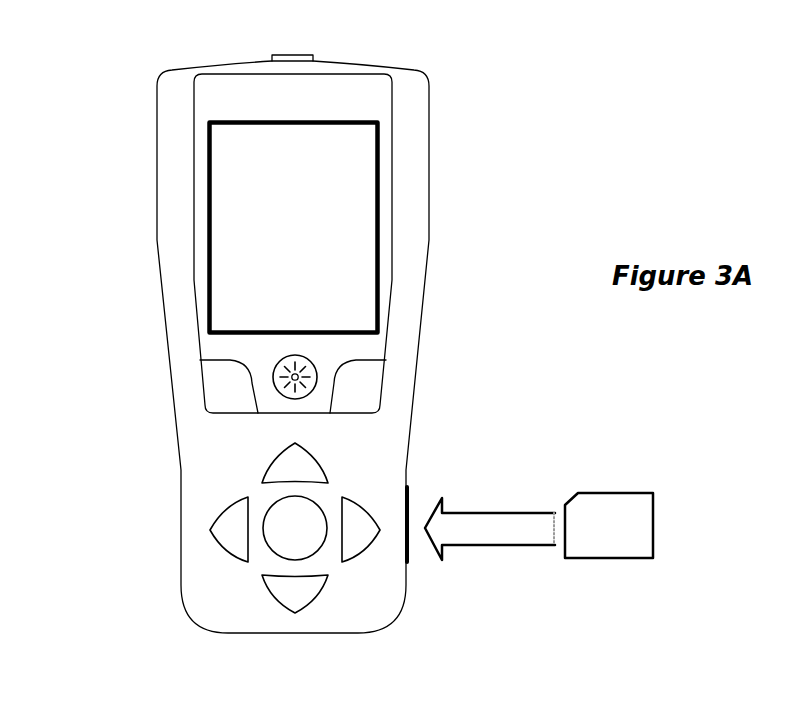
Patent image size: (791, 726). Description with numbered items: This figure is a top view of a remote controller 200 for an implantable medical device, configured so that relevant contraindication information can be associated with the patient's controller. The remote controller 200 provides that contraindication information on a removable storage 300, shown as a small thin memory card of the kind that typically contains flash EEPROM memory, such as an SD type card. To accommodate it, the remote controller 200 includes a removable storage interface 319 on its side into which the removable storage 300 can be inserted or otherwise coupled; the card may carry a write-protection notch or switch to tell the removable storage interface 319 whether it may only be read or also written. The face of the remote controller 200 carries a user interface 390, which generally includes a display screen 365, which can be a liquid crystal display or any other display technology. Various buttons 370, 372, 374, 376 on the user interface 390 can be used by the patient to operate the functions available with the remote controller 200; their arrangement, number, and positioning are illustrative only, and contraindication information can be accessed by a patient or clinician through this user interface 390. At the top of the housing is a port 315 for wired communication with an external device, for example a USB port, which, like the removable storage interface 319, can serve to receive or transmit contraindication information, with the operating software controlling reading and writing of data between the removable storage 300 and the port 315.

The remote controller 200 is at (466, 181).
The removable storage 300 is at (653, 508).
The port 315 is at (303, 52).
The removable storage interface 319 is at (412, 518).
The display screen 365 is at (308, 242).
The button 370 is at (312, 538).
The button 372 is at (302, 467).
The button 374 is at (235, 408).
The button 376 is at (315, 378).
The user interface 390 is at (128, 269).